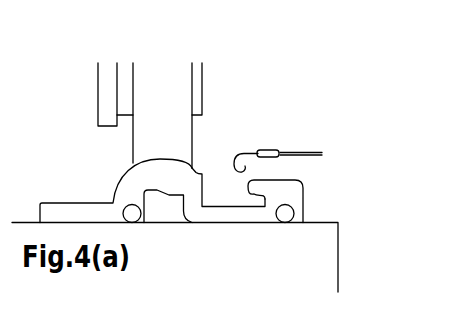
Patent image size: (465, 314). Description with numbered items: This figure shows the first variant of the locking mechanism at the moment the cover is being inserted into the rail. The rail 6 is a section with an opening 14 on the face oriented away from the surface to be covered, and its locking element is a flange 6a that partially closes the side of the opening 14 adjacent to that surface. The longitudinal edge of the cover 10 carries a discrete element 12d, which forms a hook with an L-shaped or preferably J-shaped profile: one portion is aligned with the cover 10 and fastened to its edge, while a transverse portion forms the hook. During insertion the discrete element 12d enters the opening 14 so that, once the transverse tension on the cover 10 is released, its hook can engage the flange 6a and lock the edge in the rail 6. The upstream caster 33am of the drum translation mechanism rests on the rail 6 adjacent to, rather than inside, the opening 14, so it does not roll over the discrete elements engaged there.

The upstream caster 33am is at (158, 78).
The opening 14 is at (232, 192).
The discrete element 12d is at (260, 146).
The cover 10 is at (308, 148).
The flange 6a is at (256, 178).
The rail 6 is at (238, 215).